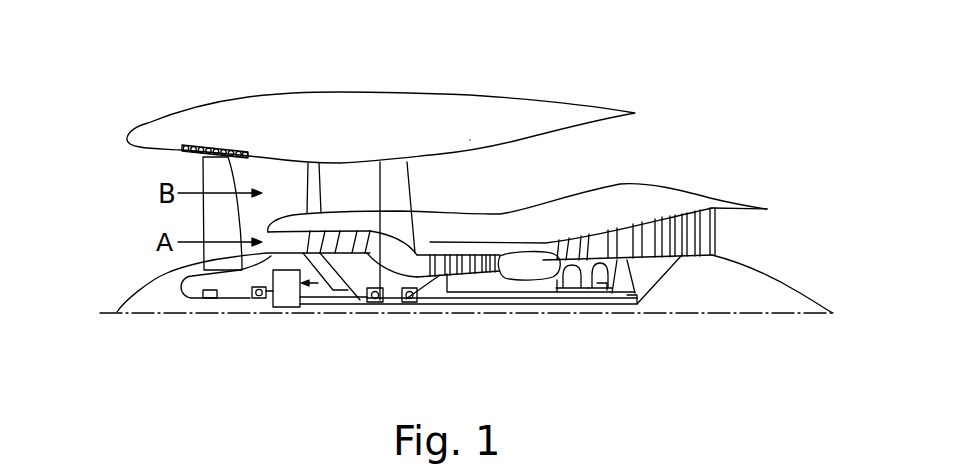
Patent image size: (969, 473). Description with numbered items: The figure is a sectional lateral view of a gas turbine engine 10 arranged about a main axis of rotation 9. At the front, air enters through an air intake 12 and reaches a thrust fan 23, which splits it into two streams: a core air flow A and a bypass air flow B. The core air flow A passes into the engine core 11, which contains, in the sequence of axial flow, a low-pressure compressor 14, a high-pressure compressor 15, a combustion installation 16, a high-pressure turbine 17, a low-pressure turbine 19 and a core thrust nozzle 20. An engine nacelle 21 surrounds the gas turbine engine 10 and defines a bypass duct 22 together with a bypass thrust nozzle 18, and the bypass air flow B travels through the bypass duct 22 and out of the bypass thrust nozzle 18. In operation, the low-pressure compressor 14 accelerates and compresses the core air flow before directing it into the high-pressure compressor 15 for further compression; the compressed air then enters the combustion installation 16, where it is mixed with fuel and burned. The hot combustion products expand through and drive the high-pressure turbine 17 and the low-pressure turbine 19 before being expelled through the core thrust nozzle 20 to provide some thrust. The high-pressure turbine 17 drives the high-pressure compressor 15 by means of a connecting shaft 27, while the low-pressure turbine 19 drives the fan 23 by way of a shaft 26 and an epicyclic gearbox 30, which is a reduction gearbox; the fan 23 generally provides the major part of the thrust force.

The main axis of rotation 9 is at (737, 313).
The gas turbine engine 10 is at (176, 107).
The core 11 is at (537, 226).
The air intake 12 is at (130, 167).
The low-pressure compressor 14 is at (343, 240).
The high-pressure compressor 15 is at (463, 262).
The combustion installation 16 is at (520, 263).
The high-pressure turbine 17 is at (578, 244).
The bypass thrust nozzle 18 is at (694, 132).
The low-pressure turbine 19 is at (692, 246).
The core thrust nozzle 20 is at (772, 243).
The engine nacelle 21 is at (392, 108).
The bypass duct 22 is at (613, 152).
The thrust fan 23 is at (208, 228).
The shaft 26 is at (433, 305).
The connecting shaft 27 is at (492, 305).
The epicyclic gearbox 30 is at (288, 306).